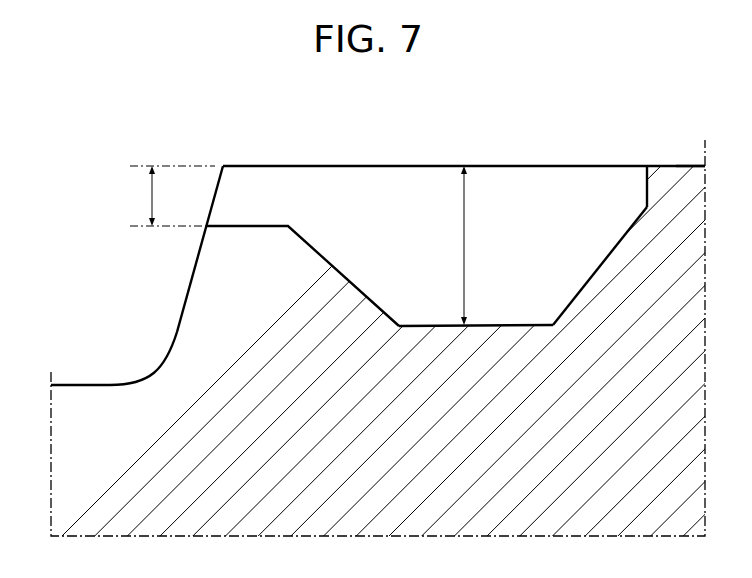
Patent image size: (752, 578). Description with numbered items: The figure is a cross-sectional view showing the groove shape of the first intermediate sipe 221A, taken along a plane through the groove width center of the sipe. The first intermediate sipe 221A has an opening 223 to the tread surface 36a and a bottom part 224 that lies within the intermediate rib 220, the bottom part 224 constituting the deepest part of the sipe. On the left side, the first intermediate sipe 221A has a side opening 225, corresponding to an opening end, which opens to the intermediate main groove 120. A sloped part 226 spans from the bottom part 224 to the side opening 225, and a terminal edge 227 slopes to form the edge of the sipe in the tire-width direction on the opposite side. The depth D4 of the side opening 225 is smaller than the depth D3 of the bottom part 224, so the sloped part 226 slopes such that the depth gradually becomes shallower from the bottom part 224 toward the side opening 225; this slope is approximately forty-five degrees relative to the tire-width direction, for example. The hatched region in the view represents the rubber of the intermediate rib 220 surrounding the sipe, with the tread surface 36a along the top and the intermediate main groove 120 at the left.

The intermediate main groove 120 is at (82, 385).
The intermediate rib 220 is at (667, 165).
The first intermediate sipe 221A is at (374, 218).
The opening 223 is at (482, 177).
The bottom part 224 is at (510, 325).
The side opening 225 is at (223, 202).
The sloped part 226 is at (325, 250).
The terminal edge 227 is at (645, 187).
The tread surface 36a is at (682, 165).
The depth of the bottom part D3 is at (448, 245).
The depth of the side opening D4 is at (165, 196).